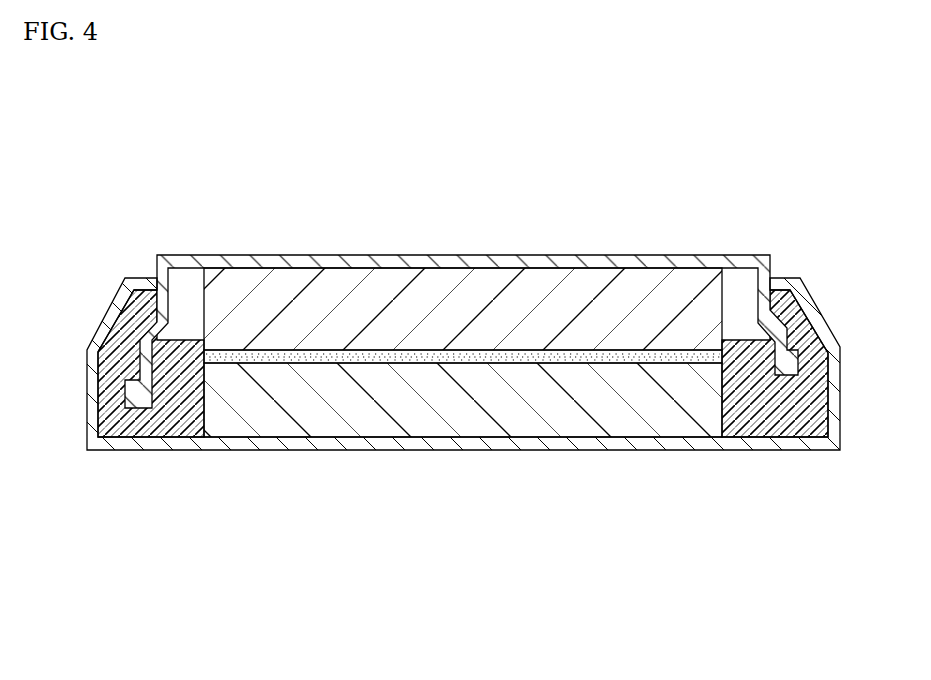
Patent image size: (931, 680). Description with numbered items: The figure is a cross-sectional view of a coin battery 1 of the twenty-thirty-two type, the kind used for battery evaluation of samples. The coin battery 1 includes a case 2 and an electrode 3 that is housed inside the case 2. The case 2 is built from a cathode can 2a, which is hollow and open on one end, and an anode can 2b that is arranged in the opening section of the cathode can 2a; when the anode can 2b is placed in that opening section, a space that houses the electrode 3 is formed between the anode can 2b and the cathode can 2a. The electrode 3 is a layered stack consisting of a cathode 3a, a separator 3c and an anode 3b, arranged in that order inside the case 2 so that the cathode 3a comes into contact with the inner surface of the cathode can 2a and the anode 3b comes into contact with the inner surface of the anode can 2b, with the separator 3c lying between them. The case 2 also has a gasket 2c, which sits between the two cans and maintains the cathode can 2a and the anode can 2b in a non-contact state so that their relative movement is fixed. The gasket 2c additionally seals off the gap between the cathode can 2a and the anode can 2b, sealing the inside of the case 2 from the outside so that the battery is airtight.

The 2032-type coin battery 1 is at (451, 349).
The case 2 is at (451, 320).
The cathode can 2a is at (247, 143).
The anode can 2b is at (229, 255).
The gasket 2c is at (133, 287).
The electrode 3 is at (463, 435).
The cathode 3a is at (632, 535).
The anode 3b is at (597, 330).
The separator 3c is at (467, 365).